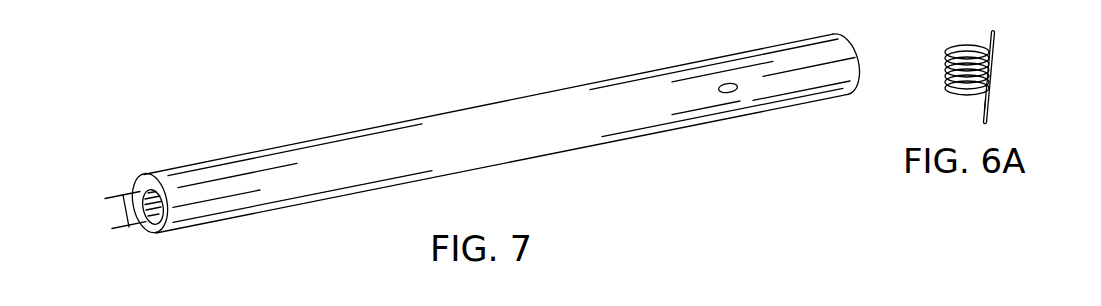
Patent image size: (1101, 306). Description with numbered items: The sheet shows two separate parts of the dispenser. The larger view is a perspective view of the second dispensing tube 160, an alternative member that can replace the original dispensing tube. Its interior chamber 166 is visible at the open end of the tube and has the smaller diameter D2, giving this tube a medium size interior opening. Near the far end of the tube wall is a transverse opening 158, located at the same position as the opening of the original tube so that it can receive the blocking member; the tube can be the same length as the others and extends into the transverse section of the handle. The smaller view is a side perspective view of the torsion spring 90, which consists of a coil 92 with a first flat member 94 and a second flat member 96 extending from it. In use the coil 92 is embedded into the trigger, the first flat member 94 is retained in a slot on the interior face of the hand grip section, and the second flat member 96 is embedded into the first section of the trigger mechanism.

In FIG. 7, the second dispensing tube 160 is at (364, 110).
In FIG. 7, the interior chamber 166 is at (157, 218).
In FIG. 7, the transverse opening 158 is at (730, 93).
In FIG. 7, the diameter D2 is at (123, 210).
In FIG. 6A, the torsion spring 90 is at (982, 72).
In FIG. 6A, the coil 92 is at (945, 75).
In FIG. 6A, the second flat member 96 is at (988, 35).
In FIG. 6A, the first flat member 94 is at (983, 113).